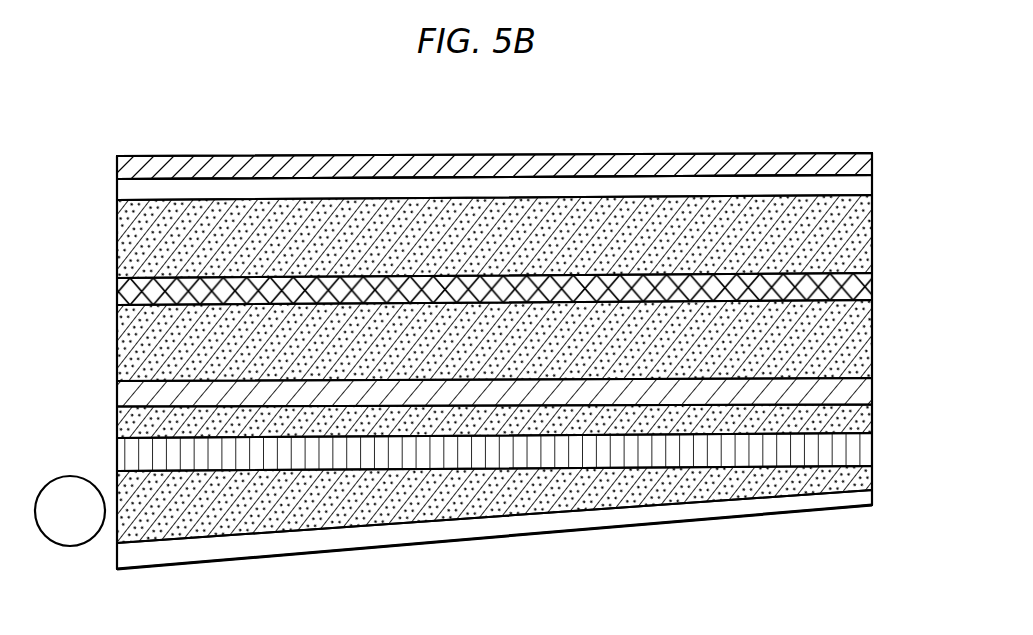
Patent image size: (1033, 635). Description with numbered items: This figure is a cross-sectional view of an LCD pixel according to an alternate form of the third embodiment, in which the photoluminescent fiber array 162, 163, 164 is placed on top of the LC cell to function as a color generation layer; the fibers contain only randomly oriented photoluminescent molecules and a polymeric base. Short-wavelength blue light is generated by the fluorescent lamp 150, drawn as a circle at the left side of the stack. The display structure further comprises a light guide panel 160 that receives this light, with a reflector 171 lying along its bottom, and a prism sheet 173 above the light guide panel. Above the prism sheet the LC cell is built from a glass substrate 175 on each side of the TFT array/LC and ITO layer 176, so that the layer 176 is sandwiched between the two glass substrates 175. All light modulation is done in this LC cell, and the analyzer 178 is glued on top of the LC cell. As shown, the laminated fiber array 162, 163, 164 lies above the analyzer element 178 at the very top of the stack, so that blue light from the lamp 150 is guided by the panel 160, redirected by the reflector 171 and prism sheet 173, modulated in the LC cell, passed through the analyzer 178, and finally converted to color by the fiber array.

The fluorescent lamp 150 is at (68, 476).
The light guide panel 160 is at (163, 528).
The PL fiber array 162 is at (494, 142).
The PL fiber array 163 is at (494, 142).
The PL fiber array 164 is at (452, 155).
The reflector 171 is at (705, 513).
The prism sheet 173 is at (866, 450).
The glass substrate 175 is at (867, 230).
The TFT array/LC and ITO layer 176 is at (118, 290).
The analyzer 178 is at (866, 190).